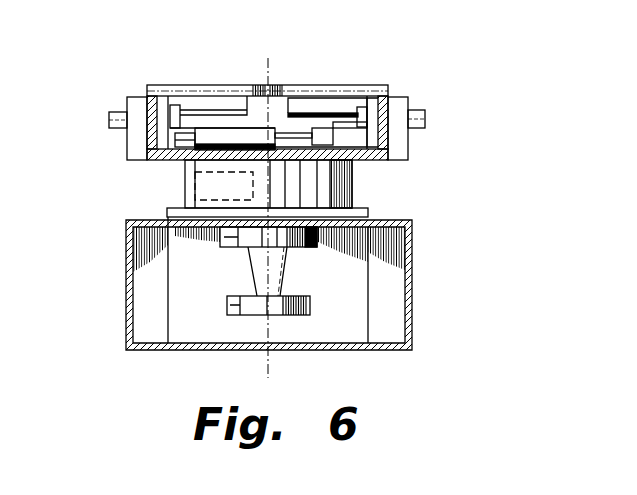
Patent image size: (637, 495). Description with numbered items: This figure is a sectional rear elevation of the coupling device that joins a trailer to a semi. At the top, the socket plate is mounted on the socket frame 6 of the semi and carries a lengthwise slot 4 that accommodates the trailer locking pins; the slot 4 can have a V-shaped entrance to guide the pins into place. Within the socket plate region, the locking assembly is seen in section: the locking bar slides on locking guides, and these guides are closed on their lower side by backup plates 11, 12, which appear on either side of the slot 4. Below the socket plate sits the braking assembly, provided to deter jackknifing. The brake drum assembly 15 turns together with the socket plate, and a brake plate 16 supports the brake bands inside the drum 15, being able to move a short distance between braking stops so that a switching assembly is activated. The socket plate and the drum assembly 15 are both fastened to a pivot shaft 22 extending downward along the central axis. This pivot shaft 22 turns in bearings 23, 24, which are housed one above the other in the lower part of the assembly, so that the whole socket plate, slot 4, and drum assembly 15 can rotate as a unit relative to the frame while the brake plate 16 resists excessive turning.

The lengthwise slot 4 is at (260, 87).
The socket frame 6 is at (412, 305).
The backup plate 11 is at (205, 110).
The backup plate 12 is at (310, 108).
The brake drum assembly 15 is at (200, 190).
The brake plate 16 is at (340, 205).
The pivot shaft 22 is at (283, 270).
The bearing 23 is at (220, 230).
The bearing 24 is at (235, 305).